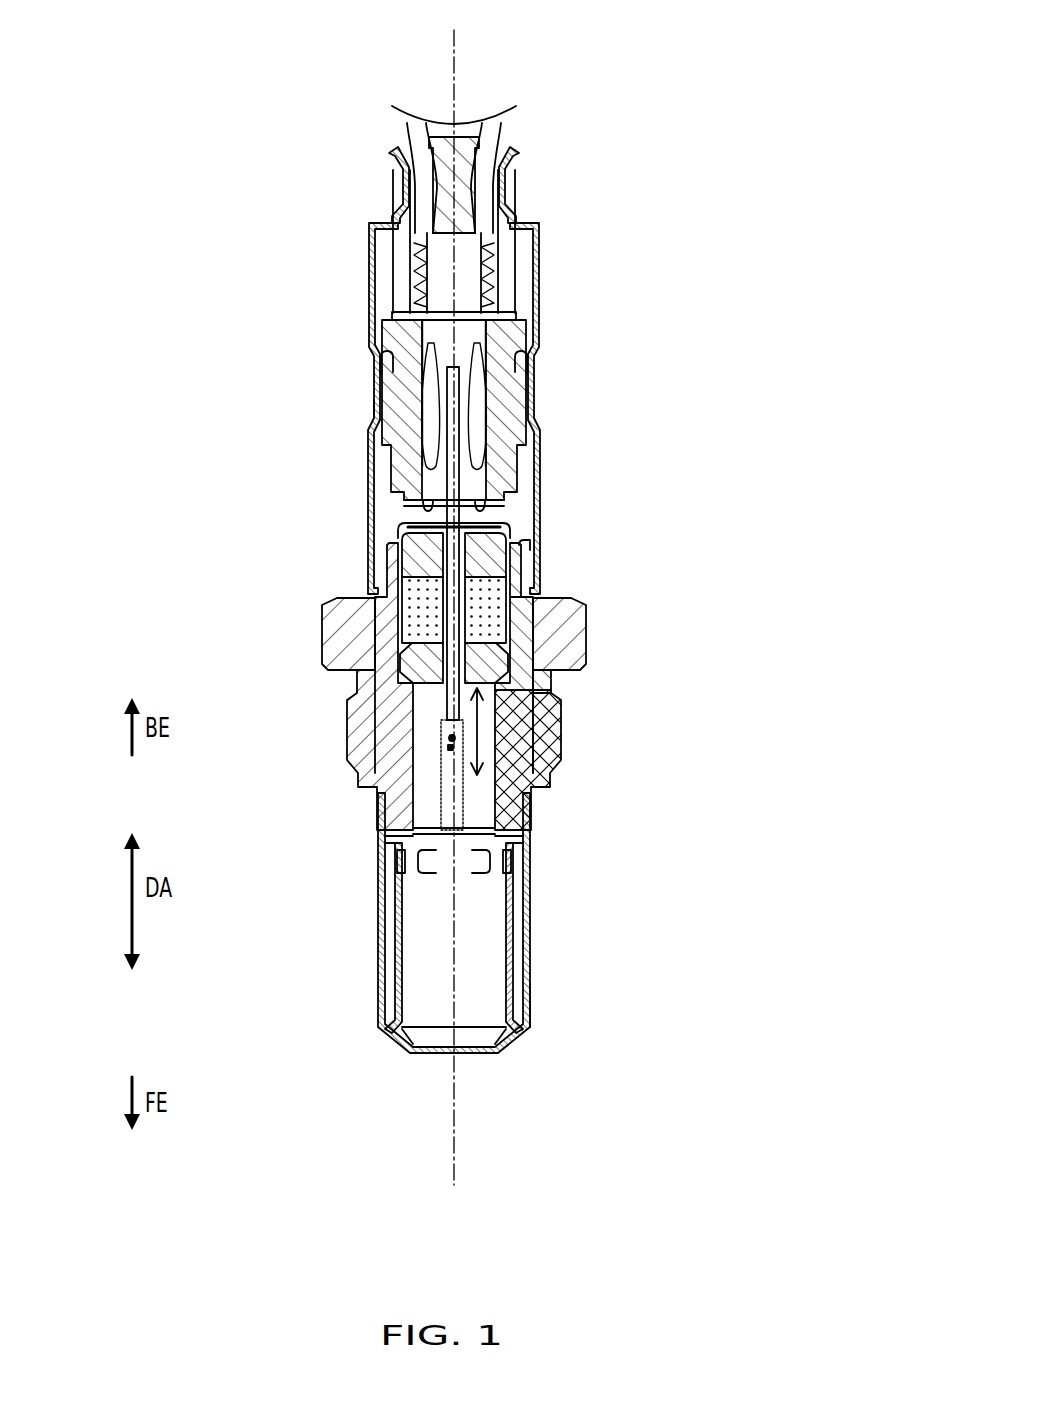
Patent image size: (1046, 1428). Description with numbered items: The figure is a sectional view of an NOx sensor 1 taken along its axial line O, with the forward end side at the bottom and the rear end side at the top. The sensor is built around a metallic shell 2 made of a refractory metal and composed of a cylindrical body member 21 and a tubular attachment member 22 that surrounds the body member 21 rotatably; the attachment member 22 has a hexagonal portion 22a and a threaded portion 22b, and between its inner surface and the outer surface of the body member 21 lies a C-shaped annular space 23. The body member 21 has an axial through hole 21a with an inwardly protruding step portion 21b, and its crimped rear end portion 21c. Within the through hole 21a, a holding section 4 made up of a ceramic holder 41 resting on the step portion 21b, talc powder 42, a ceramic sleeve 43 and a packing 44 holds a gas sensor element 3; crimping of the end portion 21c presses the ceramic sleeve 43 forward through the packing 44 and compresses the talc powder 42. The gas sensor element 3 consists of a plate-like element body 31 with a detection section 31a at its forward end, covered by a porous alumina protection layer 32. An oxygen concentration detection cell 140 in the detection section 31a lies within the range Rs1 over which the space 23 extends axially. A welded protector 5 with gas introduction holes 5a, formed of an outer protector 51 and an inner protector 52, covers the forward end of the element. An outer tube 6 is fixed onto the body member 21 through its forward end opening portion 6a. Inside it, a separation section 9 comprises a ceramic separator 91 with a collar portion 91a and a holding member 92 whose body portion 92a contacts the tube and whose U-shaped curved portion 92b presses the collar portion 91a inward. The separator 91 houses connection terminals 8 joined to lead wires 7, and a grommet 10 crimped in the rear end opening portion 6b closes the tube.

The NOx sensor 1 is at (653, 102).
The axial line O is at (455, 68).
The metallic shell 2 is at (745, 563).
The gas sensor element 3 is at (300, 692).
The holding section 4 is at (230, 553).
The protector 5 is at (300, 877).
The outer tube 6 is at (371, 465).
The forward end side end opening portion 6a is at (528, 520).
The rear end side end opening portion 6b is at (395, 150).
The lead wires 7 is at (414, 195).
The connection terminals 8 is at (420, 268).
The separation section 9 is at (652, 303).
The grommet 10 is at (478, 172).
The body member 21 is at (545, 608).
The through hole 21a is at (522, 585).
The step portion 21b is at (534, 690).
The end portion 21c is at (537, 512).
The attachment member 22 is at (692, 594).
The hexagonal portion 22a is at (565, 645).
The threaded portion 22b is at (565, 692).
The space 23 is at (535, 703).
The element body 31 is at (440, 700).
The detection section 31a is at (458, 808).
The protection layer 32 is at (440, 737).
The ceramic holder 41 is at (405, 662).
The talc powder 42 is at (420, 620).
The ceramic sleeve 43 is at (400, 565).
The packing 44 is at (398, 540).
The outer protector 51 is at (380, 893).
The inner protector 52 is at (397, 928).
The gas introduction holes 5a is at (527, 996).
The separator 91 is at (500, 340).
The collar portion 91a is at (412, 318).
The holding member 92 is at (528, 378).
The body portion 92a is at (378, 404).
The curved portion 92b is at (383, 360).
The oxygen concentration detection cell 140 is at (445, 745).
The range Rs1 is at (521, 768).